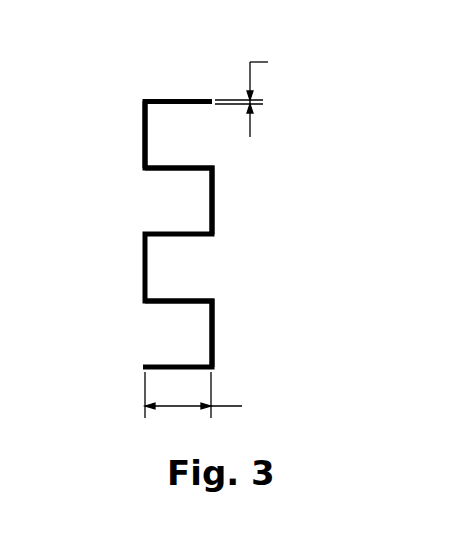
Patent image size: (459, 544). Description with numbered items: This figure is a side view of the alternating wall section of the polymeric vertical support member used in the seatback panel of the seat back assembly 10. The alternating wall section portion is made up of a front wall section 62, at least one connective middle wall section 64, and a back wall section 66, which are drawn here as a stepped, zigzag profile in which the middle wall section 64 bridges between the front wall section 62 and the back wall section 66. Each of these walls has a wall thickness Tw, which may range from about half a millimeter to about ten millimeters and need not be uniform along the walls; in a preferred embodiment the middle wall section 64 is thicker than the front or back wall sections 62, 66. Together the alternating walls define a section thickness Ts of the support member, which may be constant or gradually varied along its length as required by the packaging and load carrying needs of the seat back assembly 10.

The seat back assembly 10 is at (193, 57).
The front wall section 62 is at (143, 133).
The connective middle wall section 64 is at (197, 167).
The back wall section 66 is at (212, 320).
The wall thickness Tw is at (258, 95).
The section thickness Ts is at (207, 395).